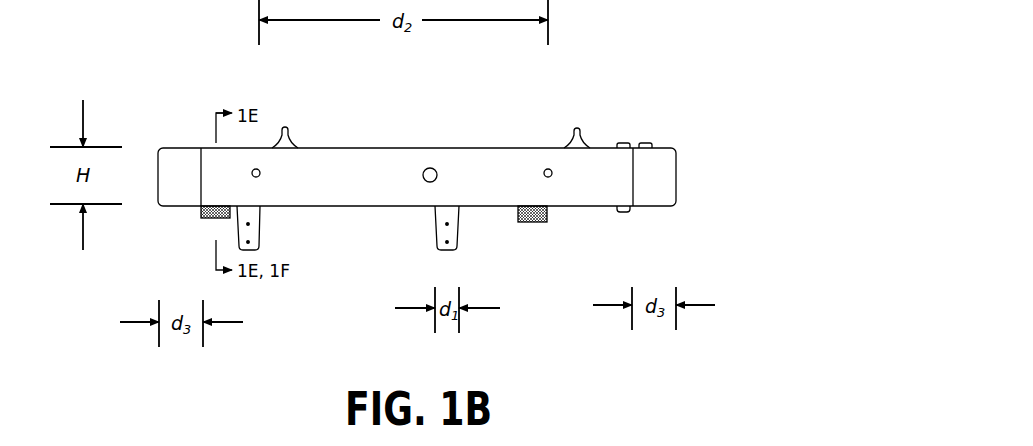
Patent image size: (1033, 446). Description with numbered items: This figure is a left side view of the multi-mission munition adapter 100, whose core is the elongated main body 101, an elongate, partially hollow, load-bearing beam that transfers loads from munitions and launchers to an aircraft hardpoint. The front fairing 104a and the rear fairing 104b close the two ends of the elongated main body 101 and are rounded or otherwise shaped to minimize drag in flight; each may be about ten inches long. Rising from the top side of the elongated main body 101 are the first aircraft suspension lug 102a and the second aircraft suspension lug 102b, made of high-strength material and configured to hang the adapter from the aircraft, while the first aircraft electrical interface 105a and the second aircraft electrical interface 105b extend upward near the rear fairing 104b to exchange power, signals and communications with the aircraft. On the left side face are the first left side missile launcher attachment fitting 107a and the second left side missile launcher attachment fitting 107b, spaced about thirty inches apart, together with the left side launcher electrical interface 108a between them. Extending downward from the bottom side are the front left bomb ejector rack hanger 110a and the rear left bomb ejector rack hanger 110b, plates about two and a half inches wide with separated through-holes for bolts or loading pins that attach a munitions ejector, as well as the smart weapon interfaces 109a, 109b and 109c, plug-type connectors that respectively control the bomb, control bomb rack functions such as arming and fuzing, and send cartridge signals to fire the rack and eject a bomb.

The multi-mission munition adapter 100 is at (823, 333).
The elongated main body 101 is at (500, 148).
The first aircraft suspension lug 102a is at (285, 127).
The second aircraft suspension lug 102b is at (575, 130).
The front fairing 104a is at (176, 148).
The rear fairing 104b is at (676, 170).
The first aircraft electrical interface 105a is at (622, 143).
The second aircraft electrical interface 105b is at (645, 143).
The first left side missile launcher attachment fitting 107a is at (260, 170).
The second left side missile launcher attachment fitting 107b is at (552, 172).
The left side launcher electrical interface 108a is at (430, 168).
The smart weapon interface 109a is at (620, 212).
The smart weapon interface 109b is at (203, 218).
The smart weapon interface 109c is at (543, 222).
The front left bomb ejector rack hanger 110a is at (262, 245).
The rear left bomb ejector rack hanger 110b is at (437, 240).